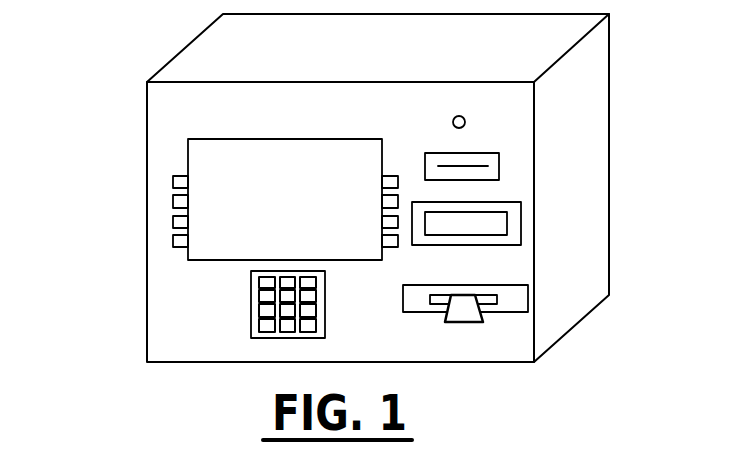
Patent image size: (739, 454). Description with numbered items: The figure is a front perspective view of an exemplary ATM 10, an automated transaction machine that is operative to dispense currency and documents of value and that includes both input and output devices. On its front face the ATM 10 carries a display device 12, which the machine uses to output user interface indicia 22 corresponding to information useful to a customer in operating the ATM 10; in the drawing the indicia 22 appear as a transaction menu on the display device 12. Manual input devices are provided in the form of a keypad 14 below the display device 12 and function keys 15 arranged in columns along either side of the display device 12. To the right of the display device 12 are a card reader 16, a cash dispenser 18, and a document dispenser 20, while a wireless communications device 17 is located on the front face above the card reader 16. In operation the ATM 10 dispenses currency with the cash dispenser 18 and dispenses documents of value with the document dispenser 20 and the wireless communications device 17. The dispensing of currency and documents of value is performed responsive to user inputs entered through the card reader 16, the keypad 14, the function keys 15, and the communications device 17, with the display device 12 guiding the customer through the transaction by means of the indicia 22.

The ATM 10 is at (611, 53).
The display device 12 is at (188, 153).
The keypad 14 is at (250, 328).
The function keys 15 is at (173, 243).
The card reader 16 is at (499, 163).
The wireless communications device 17 is at (459, 116).
The cash dispenser 18 is at (521, 225).
The document dispenser 20 is at (528, 297).
The user interface indicia 22 is at (201, 137).